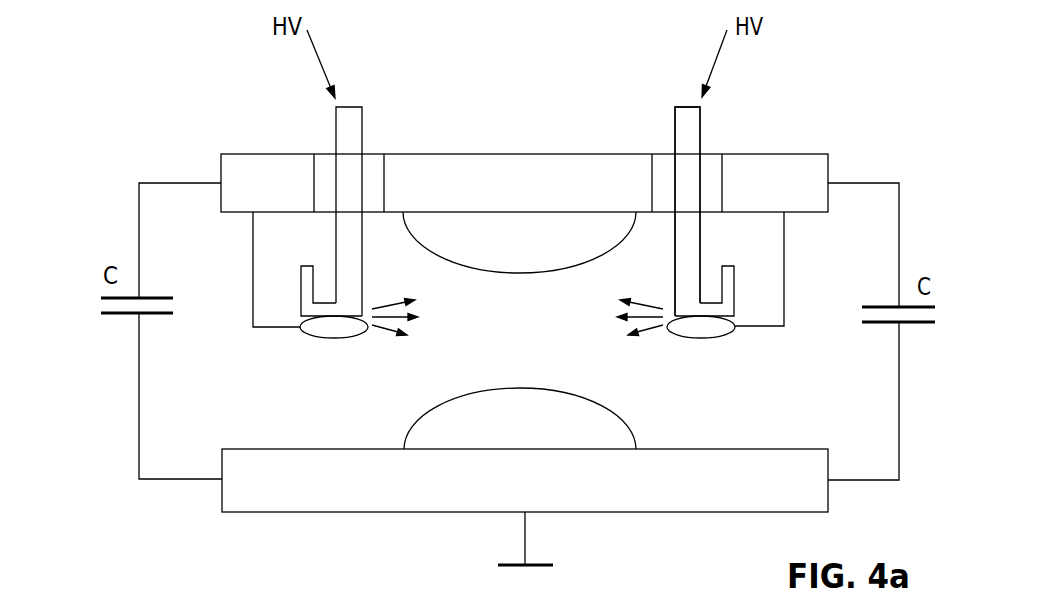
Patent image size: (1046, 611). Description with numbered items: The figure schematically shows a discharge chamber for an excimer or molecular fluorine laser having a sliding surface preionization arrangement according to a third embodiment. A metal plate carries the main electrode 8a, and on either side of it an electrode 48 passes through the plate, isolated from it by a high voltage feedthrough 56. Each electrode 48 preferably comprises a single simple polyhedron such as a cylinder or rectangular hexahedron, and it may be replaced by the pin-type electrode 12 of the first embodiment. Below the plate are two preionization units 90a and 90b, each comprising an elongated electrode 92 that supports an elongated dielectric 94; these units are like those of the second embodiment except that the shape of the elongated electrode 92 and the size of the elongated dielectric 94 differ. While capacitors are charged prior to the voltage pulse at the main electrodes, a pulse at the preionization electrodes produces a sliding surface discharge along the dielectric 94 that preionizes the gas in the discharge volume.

The main electrode 8a is at (501, 230).
The high voltage feedthrough 56 is at (708, 178).
The electrode 48 is at (688, 254).
The electrode 12 is at (687, 211).
The elongated dielectric 94 is at (735, 290).
The elongated electrode 92 is at (713, 328).
The preionization unit 90a is at (328, 357).
The preionization unit 90b is at (710, 359).